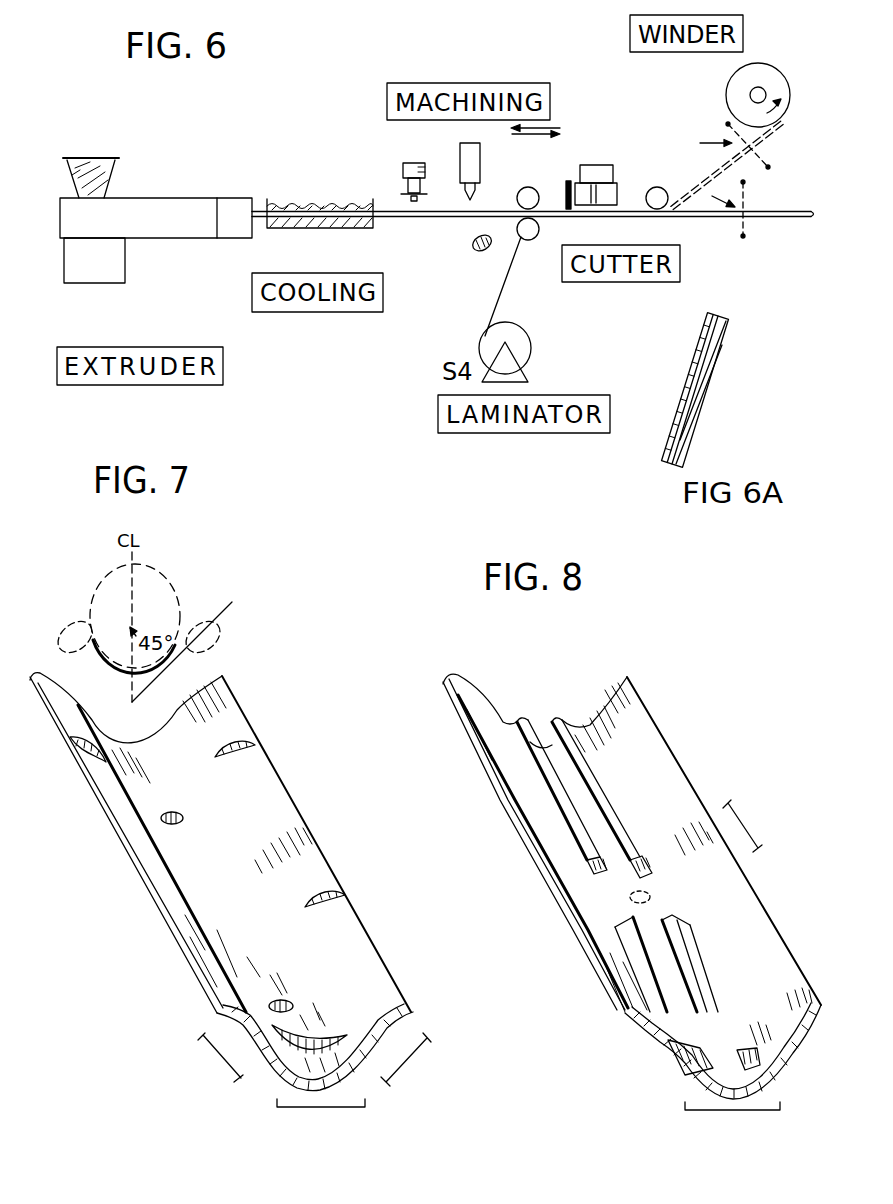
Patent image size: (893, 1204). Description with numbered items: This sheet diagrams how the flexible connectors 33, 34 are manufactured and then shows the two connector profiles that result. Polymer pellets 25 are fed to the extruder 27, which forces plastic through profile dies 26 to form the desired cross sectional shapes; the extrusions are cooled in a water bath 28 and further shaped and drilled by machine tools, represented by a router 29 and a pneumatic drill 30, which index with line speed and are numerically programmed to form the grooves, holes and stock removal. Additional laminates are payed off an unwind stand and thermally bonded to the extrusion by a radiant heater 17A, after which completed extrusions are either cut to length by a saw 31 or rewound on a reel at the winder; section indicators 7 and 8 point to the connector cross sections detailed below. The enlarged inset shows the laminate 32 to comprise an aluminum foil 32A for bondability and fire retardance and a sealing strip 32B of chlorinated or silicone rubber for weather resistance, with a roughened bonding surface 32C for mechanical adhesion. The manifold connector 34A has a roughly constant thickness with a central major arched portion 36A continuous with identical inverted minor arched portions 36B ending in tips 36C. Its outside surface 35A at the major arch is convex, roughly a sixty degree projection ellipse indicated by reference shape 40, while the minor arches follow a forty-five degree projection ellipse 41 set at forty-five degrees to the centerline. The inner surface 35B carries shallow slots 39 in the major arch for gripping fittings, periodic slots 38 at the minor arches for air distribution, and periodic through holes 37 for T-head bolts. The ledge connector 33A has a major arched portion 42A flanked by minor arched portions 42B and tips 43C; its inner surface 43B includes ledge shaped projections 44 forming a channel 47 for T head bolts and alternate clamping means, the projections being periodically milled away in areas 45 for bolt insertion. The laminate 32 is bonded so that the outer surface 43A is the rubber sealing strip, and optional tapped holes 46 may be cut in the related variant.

In FIG. 6, the polymer pellets 25 is at (84, 170).
In FIG. 6, the profile dies 26 is at (236, 212).
In FIG. 6, the extruder 27 is at (85, 270).
In FIG. 6, the water bath 28 is at (305, 205).
In FIG. 6, the router 29 is at (412, 162).
In FIG. 6, the pneumatic drill 30 is at (463, 168).
In FIG. 6, the saw 31 is at (601, 172).
In FIG. 6, the radiant heater 17A is at (466, 243).
In FIG. 6, the laminate 32 is at (488, 300).
In FIG. 6A, the laminate 32 is at (726, 325).
In FIG. 8, the laminate 32 is at (670, 1063).
In FIG. 6, the flexible connector 33 is at (767, 135).
In FIG. 6, the flexible connector 34 is at (777, 218).
In FIG. 6, the FIG. 7 section line 7 is at (741, 214).
In FIG. 6, the FIG. 8 section line 8 is at (745, 150).
In FIG. 6A, the aluminum foil 32A is at (686, 378).
In FIG. 6A, the sealing strip 32B is at (700, 403).
In FIG. 6A, the bonding surface 32C is at (672, 440).
In FIG. 7, the 60° projection ellipse 40 is at (152, 590).
In FIG. 7, the 45° projection ellipse 41 is at (63, 645).
In FIG. 7, the manifold connector 34A is at (147, 861).
In FIG. 7, the outside surface 35A is at (363, 1077).
In FIG. 7, the inner surface 35B is at (292, 836).
In FIG. 7, the major arched portion 36A is at (321, 1122).
In FIG. 7, the minor arched portions 36B is at (315, 1059).
In FIG. 7, the tips 36C is at (215, 1013).
In FIG. 7, the through holes 37 is at (160, 818).
In FIG. 7, the periodic slots 38 is at (70, 745).
In FIG. 7, the shallow slots 39 is at (331, 1037).
In FIG. 8, the ledge connector 33A is at (467, 705).
In FIG. 8, the major arched portion 42A is at (732, 1129).
In FIG. 8, the minor arched portions 42B is at (657, 1037).
In FIG. 8, the outer surface 43A is at (680, 1080).
In FIG. 8, the inner surface 43B is at (604, 702).
In FIG. 8, the tips 43C is at (818, 1003).
In FIG. 8, the ledge shaped projections 44 is at (557, 720).
In FIG. 8, the milled away areas 45 is at (752, 821).
In FIG. 8, the tapped holes 46 is at (597, 890).
In FIG. 8, the channel 47 is at (623, 874).